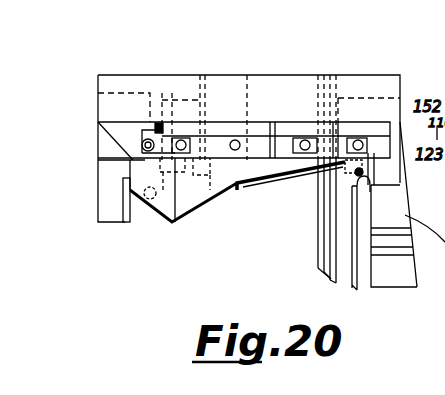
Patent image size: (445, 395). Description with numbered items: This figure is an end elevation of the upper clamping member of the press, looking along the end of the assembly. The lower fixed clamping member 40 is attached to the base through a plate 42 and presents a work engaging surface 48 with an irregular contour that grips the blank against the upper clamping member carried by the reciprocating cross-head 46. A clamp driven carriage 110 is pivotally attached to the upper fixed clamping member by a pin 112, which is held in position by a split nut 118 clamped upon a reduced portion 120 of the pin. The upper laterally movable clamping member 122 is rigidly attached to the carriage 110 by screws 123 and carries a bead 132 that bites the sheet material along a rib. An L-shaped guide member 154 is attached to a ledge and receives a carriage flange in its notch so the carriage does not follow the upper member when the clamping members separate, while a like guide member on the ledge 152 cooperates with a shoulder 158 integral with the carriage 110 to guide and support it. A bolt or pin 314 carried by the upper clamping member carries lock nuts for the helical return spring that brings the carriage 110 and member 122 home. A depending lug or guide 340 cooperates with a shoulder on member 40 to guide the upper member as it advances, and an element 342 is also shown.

The lower fixed clamping member 40 is at (322, 253).
The plate 42 is at (330, 278).
The reciprocating cross-head 46 is at (357, 288).
The work engaging surface 48 is at (370, 192).
The clamp driven carriage 110 is at (257, 150).
The pin 112 is at (360, 173).
The nut 118 is at (356, 172).
The reduced portion 120 is at (400, 182).
The upper laterally movable clamping member 122 is at (235, 190).
The screw 123 is at (305, 140).
The bead 132 is at (262, 188).
The ledge 152 is at (352, 123).
The L-shaped guide member 154 is at (143, 130).
The shoulder 158 is at (156, 123).
The bolt or pin 314 is at (154, 143).
The depending lug or guide 340 is at (113, 212).
The guide block 342 is at (133, 212).